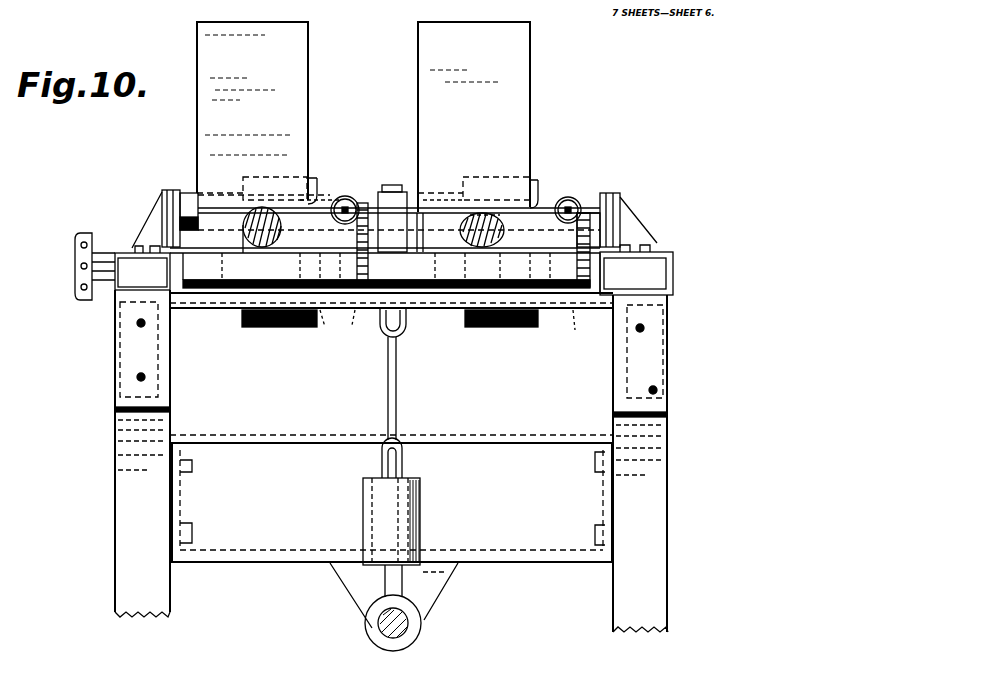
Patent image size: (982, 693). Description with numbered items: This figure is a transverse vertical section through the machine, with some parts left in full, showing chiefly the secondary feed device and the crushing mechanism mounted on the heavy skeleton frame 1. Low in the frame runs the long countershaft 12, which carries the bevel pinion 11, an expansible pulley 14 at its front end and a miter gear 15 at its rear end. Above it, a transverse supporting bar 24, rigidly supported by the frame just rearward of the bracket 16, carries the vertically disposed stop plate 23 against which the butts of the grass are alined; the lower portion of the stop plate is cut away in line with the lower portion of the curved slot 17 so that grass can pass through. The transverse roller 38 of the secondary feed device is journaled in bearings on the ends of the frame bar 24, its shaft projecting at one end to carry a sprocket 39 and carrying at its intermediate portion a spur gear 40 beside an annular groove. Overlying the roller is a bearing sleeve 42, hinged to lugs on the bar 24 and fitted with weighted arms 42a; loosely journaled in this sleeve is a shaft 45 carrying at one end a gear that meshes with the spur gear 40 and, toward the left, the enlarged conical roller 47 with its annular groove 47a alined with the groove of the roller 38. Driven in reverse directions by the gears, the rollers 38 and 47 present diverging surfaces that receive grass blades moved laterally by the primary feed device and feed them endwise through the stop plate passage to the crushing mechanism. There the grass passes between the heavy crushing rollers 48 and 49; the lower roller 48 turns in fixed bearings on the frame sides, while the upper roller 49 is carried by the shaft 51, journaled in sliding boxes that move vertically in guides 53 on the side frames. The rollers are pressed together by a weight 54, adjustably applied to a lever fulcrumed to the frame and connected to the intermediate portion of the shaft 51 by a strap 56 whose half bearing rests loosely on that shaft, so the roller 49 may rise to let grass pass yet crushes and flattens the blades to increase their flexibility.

The skeleton frame 1 is at (125, 512).
The bevel pinion 11 is at (275, 330).
The long countershaft 12 is at (387, 607).
The expansible pulley 14 is at (555, 548).
The miter gear 15 is at (567, 328).
The bracket 16 is at (358, 196).
The curved slot 17 is at (481, 213).
The stop plate 23 is at (197, 60).
The transverse supporting bar 24 is at (320, 333).
The roller 38 is at (228, 292).
The sprocket 39 is at (84, 300).
The spur gear 40 is at (354, 326).
The bearing sleeve 42 is at (322, 190).
The weighted arms 42a is at (605, 120).
The shaft 45 is at (560, 198).
The enlarged head or roller 47 is at (250, 210).
The annular groove 47a is at (335, 195).
The crushing roller 48 is at (297, 330).
The crushing roller 49 is at (330, 195).
The shaft 51 is at (190, 193).
The guides 53 is at (162, 191).
The weight 54 is at (409, 501).
The strap 56 is at (406, 373).